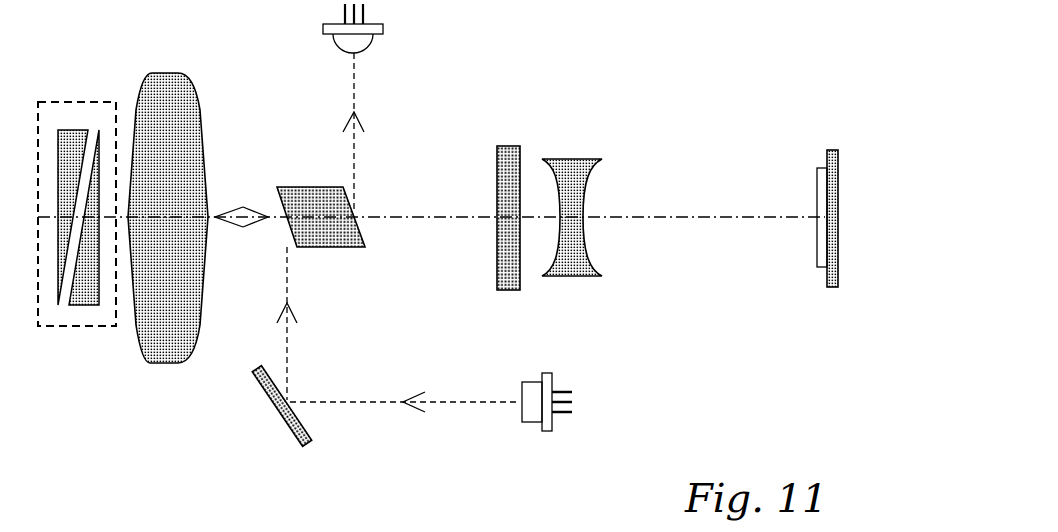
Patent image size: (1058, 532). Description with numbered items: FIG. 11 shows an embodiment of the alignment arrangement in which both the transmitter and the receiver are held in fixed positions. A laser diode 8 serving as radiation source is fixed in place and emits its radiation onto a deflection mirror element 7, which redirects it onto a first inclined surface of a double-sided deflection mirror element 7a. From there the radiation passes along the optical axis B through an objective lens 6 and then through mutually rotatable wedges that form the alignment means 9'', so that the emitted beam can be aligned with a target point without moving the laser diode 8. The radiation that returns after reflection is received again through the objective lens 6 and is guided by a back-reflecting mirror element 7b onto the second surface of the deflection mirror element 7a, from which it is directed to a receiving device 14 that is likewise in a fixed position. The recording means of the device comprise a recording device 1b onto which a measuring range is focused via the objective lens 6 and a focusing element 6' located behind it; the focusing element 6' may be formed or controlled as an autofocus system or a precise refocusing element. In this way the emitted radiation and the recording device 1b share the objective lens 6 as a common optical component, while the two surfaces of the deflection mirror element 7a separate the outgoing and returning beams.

The objective lens 6 is at (194, 201).
The double-sided deflection mirror element 7a is at (291, 173).
The receiving device 14 is at (413, 108).
The focusing element 6' is at (643, 179).
The optical axis B is at (750, 195).
The back-reflecting mirror element 7b is at (563, 239).
The recording device 1b is at (776, 241).
The deflection mirror element 7 is at (349, 346).
The alignment means 9'' is at (132, 277).
The laser diode 8 is at (483, 399).